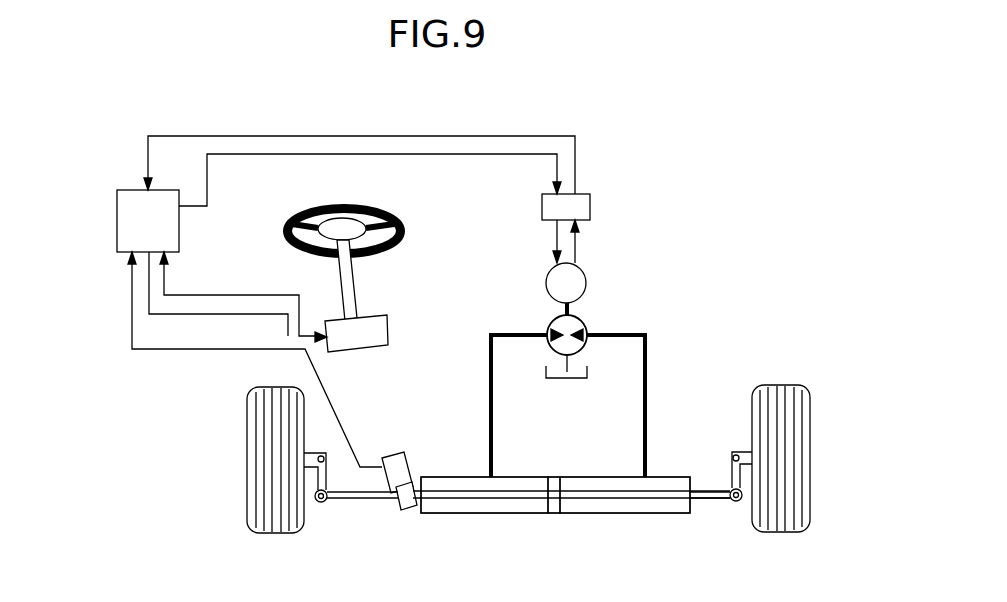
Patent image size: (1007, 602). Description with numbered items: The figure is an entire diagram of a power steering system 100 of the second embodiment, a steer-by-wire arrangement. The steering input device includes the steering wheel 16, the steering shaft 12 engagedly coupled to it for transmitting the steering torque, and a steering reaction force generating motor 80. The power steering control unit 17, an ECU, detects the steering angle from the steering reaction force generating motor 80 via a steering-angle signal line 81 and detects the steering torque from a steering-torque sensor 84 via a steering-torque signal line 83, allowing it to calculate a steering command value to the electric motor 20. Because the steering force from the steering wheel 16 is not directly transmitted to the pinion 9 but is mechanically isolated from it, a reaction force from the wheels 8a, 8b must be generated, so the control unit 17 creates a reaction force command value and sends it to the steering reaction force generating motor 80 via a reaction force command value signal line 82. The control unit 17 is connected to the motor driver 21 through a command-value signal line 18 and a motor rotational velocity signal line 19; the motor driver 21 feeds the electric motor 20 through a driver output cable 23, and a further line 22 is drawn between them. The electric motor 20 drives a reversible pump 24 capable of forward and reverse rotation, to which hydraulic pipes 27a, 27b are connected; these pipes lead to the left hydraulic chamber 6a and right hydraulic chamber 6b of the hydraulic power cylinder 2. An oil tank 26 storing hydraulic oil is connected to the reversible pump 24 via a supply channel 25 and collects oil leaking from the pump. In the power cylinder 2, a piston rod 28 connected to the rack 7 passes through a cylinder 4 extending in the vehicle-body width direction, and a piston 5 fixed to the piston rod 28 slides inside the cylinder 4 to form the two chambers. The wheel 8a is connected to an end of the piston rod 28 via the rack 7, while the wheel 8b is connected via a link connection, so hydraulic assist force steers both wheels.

The power steering system 100 is at (736, 228).
The power steering control unit 17 is at (117, 212).
The motor rotational velocity signal line 19 is at (340, 136).
The command-value signal line 18 is at (452, 155).
The steering wheel 16 is at (348, 211).
The steering shaft 12 is at (358, 297).
The steering reaction force generating motor 80 is at (360, 353).
The steering-angle signal line 81 is at (212, 295).
The reaction force command value signal line 82 is at (243, 316).
The steering-torque signal line 83 is at (173, 352).
The steering-torque sensor 84 is at (414, 463).
The pinion 9 is at (403, 509).
The rack 7 is at (355, 498).
The wheel 8a is at (278, 534).
The wheel 8b is at (781, 533).
The hydraulic power cylinder 2 is at (571, 531).
The right hydraulic chamber 6b is at (478, 513).
The left hydraulic chamber 6a is at (673, 513).
The piston 5 is at (552, 513).
The cylinder 4 is at (592, 513).
The piston rod 28 is at (720, 498).
The motor driver 21 is at (590, 206).
The driver output cable 23 is at (557, 237).
The feedback line 22 is at (578, 245).
The electric motor 20 is at (587, 278).
The reversible pump 24 is at (584, 322).
The supply channel 25 is at (577, 363).
The oil tank 26 is at (570, 379).
The hydraulic pipe 27a is at (491, 356).
The hydraulic pipe 27b is at (645, 387).